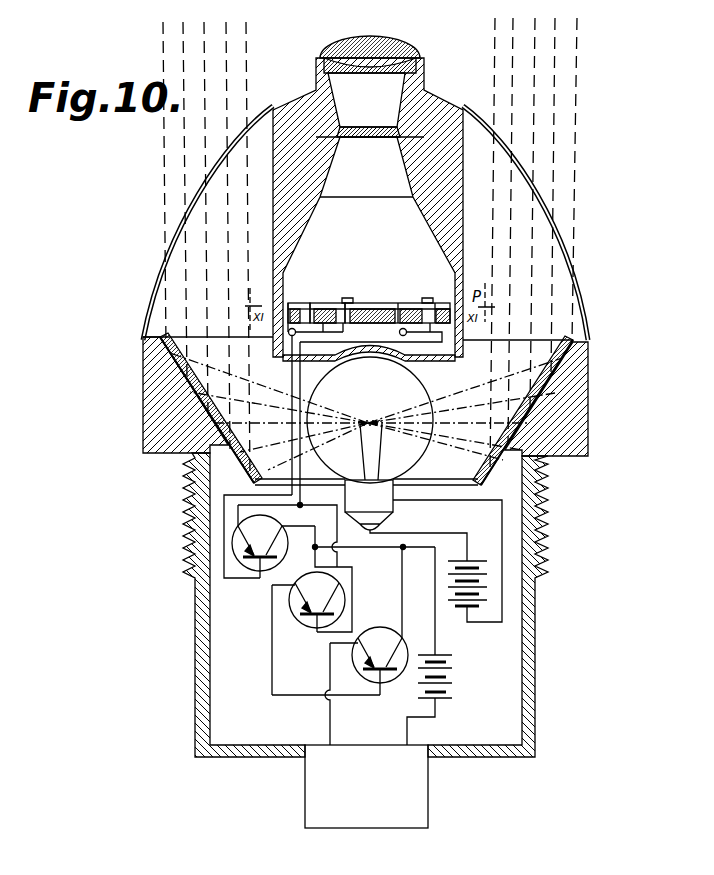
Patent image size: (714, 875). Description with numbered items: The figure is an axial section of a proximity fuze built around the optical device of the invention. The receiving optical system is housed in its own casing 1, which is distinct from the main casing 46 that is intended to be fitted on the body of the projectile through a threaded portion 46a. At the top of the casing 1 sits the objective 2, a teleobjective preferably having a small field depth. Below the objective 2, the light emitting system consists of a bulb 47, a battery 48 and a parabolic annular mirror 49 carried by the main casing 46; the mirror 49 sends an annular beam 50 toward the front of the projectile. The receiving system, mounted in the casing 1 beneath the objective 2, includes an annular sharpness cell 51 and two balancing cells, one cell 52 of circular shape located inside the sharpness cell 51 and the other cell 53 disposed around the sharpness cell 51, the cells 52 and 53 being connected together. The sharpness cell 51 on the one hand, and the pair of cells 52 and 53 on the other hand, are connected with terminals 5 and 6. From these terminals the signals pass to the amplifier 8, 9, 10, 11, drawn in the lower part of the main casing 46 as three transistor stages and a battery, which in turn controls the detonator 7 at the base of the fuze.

The casing of the receiving optical system 1 is at (435, 115).
The objective 2 is at (371, 93).
The annular beam 50 is at (163, 153).
The main casing 46 is at (568, 445).
The threaded portion 46a is at (547, 521).
The parabolic annular mirror 49 is at (590, 381).
The balancing cell 53 is at (297, 318).
The sharpness cell 51 is at (327, 318).
The balancing cell 52 is at (372, 310).
The terminal 5 is at (289, 334).
The terminal 6 is at (406, 335).
The bulb 47 is at (410, 392).
The amplifier 8 is at (258, 571).
The amplifier 9 is at (312, 621).
The amplifier 10 is at (398, 678).
The battery 48 is at (475, 602).
The amplifier 11 is at (442, 688).
The detonator 7 is at (374, 790).